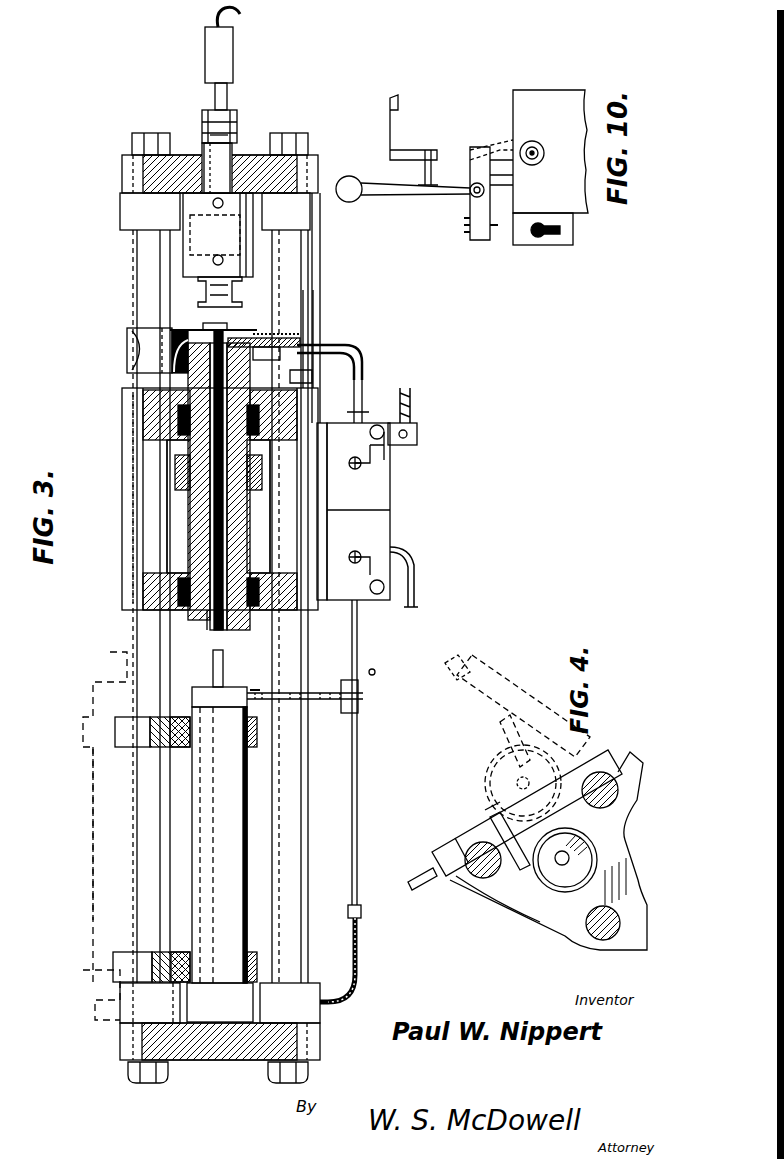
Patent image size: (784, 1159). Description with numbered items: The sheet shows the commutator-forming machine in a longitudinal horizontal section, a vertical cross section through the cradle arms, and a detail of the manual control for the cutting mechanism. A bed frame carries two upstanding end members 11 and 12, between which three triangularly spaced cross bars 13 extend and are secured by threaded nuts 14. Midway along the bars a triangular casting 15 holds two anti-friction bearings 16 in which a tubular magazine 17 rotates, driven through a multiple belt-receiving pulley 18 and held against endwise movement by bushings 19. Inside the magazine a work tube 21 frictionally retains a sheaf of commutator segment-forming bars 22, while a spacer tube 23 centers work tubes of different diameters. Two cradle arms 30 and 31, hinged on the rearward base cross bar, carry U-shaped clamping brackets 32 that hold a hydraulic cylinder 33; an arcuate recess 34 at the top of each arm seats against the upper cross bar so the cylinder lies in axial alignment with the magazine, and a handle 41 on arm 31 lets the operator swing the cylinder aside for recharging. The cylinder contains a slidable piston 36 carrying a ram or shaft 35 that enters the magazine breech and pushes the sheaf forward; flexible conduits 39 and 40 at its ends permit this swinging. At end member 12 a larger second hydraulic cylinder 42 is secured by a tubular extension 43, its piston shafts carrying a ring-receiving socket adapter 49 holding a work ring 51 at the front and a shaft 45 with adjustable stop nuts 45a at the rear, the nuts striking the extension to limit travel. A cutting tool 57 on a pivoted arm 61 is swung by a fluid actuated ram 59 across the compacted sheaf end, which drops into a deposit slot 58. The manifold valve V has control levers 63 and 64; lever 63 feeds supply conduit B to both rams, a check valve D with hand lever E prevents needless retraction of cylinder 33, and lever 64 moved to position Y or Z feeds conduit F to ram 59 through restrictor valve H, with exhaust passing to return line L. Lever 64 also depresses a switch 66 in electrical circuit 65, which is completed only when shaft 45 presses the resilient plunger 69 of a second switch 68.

In FIG. 3, the end member 11 is at (235, 1060).
In FIG. 4, the end member 11 is at (620, 880).
In FIG. 3, the end member 12 is at (122, 165).
In FIG. 3, the cross bars 13 is at (137, 640).
In FIG. 4, the cross bars 13 is at (480, 878).
In FIG. 3, the threaded nuts 14 is at (150, 133).
In FIG. 3, the casting 15 is at (122, 495).
In FIG. 3, the anti-friction bearings 16 is at (180, 420).
In FIG. 3, the tubular magazine 17 is at (190, 545).
In FIG. 3, the multiple belt-receiving pulley 18 is at (180, 470).
In FIG. 3, the bushings 19 is at (262, 455).
In FIG. 3, the work tube 21 is at (207, 632).
In FIG. 3, the sheaf of commutator segment-forming bars 22 is at (240, 530).
In FIG. 3, the spacer tube 23 is at (224, 662).
In FIG. 3, the cradle arm 30 is at (178, 952).
In FIG. 3, the cradle arm 31 is at (178, 747).
In FIG. 4, the cradle arm 31 is at (442, 852).
In FIG. 3, the U-shaped straps or clamping brackets 32 is at (255, 747).
In FIG. 4, the U-shaped straps or clamping brackets 32 is at (520, 905).
In FIG. 3, the hydraulic cylinder 33 is at (240, 868).
In FIG. 4, the hydraulic cylinder 33 is at (490, 765).
In FIG. 4, the arcuate recess 34 is at (475, 822).
In FIG. 3, the ram or shaft 35 is at (110, 672).
In FIG. 4, the ram or shaft 35 is at (560, 860).
In FIG. 3, the slidable piston 36 is at (220, 854).
In FIG. 3, the flexible conduit 39 is at (358, 968).
In FIG. 3, the flexible conduit 40 is at (312, 700).
In FIG. 4, the handle 41 is at (415, 878).
In FIG. 3, the second hydraulic cylinder 42 is at (185, 260).
In FIG. 3, the tubular extension 43 is at (205, 160).
In FIG. 3, the shaft 45 is at (237, 128).
In FIG. 3, the stop nuts 45a is at (205, 110).
In FIG. 3, the ring-receiving socket adapter 49 is at (242, 295).
In FIG. 3, the work ring 51 is at (205, 325).
In FIG. 3, the cutting tool 57 is at (312, 330).
In FIG. 3, the deposit slot 58 is at (265, 338).
In FIG. 3, the fluid actuated ram 59 is at (175, 330).
In FIG. 3, the arm 61 is at (350, 343).
In FIG. 10, the arm 61 is at (394, 115).
In FIG. 3, the control lever 63 is at (377, 600).
In FIG. 10, the control lever 63 is at (550, 167).
In FIG. 3, the control lever 64 is at (386, 452).
In FIG. 10, the control lever 64 is at (400, 192).
In FIG. 3, the electrical circuit 65 is at (241, 18).
In FIG. 10, the electrical circuit 65 is at (557, 234).
In FIG. 3, the electrical switch 66 is at (418, 436).
In FIG. 10, the electrical switch 66 is at (540, 240).
In FIG. 3, the second switch 68 is at (207, 45).
In FIG. 3, the resilient plunger 69 is at (226, 90).
In FIG. 3, the supply conduit B is at (358, 775).
In FIG. 3, the manually controlled check valve D is at (365, 713).
In FIG. 3, the hand lever E is at (375, 686).
In FIG. 4, the hand lever E is at (388, 672).
In FIG. 3, the conduit F is at (363, 358).
In FIG. 10, the conduit F is at (525, 145).
In FIG. 3, the restrictor valve H is at (366, 345).
In FIG. 3, the return line L is at (418, 580).
In FIG. 10, the lever position Y is at (470, 192).
In FIG. 10, the lever position Z is at (470, 188).